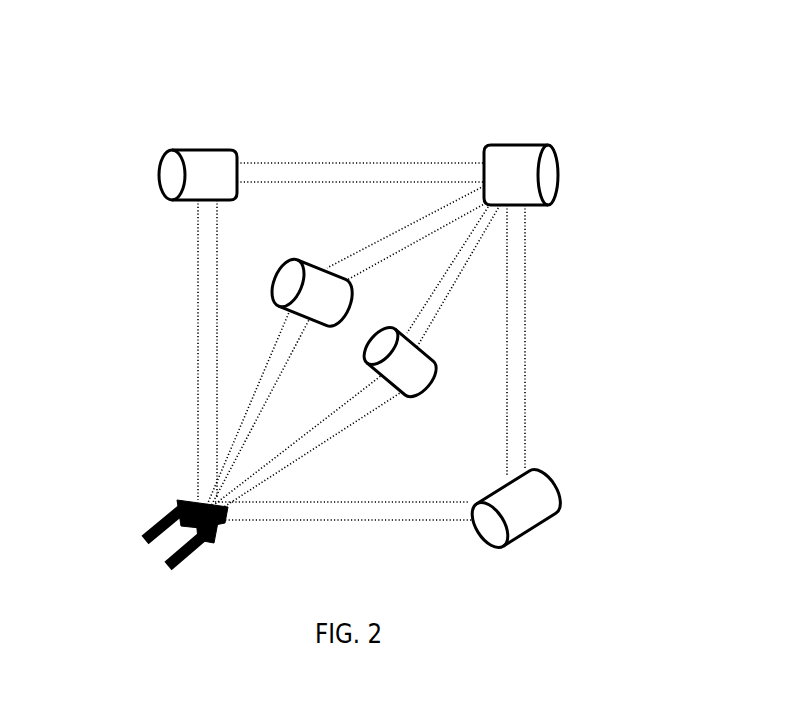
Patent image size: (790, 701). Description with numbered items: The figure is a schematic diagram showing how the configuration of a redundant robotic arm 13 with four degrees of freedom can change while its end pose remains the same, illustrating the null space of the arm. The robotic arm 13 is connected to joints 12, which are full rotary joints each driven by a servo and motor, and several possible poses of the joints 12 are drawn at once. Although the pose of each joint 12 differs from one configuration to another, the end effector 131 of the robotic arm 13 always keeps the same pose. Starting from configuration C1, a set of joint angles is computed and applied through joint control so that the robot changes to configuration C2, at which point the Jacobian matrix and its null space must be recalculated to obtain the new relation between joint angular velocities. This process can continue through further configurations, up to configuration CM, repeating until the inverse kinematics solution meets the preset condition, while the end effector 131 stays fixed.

The joint 12 is at (168, 175).
The robotic arm 13 is at (207, 357).
The end effector 131 is at (168, 508).
The configuration 1 C1 is at (342, 157).
The configuration 2 C2 is at (427, 202).
The M-th camera path CM is at (545, 367).